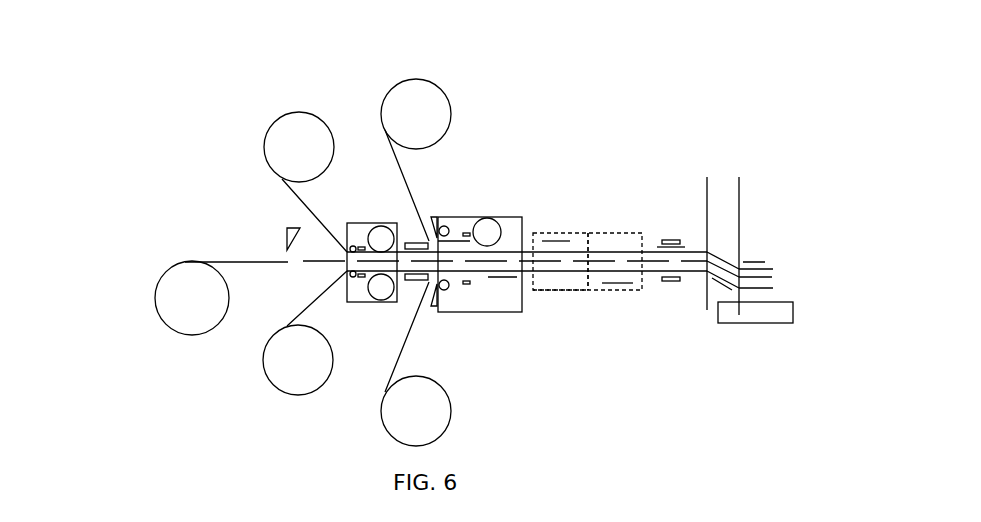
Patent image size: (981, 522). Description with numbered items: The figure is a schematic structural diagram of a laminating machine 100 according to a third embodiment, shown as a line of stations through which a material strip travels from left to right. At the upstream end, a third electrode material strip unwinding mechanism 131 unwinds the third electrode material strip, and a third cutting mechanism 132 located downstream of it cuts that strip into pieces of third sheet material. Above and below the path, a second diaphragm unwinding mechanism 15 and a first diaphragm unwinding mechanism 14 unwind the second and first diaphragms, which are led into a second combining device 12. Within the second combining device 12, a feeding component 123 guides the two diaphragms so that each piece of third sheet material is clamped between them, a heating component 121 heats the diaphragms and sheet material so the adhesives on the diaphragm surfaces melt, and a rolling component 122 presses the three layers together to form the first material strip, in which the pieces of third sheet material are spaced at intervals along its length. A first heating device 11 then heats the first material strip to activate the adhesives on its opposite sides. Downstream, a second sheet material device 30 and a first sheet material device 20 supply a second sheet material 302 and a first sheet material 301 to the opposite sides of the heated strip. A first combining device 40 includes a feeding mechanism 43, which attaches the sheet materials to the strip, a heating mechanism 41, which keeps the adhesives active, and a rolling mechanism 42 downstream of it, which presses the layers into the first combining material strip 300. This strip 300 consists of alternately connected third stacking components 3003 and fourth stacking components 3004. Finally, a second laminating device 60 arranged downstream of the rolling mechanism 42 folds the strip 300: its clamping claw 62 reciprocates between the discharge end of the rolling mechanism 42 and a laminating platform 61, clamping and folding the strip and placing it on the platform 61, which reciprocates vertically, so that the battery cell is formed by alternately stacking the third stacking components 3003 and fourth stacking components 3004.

The laminating machine 100 is at (84, 35).
The third electrode material strip unwinding mechanism 131 is at (154, 300).
The second diaphragm unwinding mechanism 15 is at (264, 150).
The first diaphragm unwinding mechanism 14 is at (263, 372).
The second sheet material device 30 is at (478, 90).
The first sheet material device 20 is at (473, 378).
The third cutting mechanism 132 is at (286, 240).
The second combining device 12 is at (372, 262).
The feeding component 123 is at (352, 243).
The heating component 121 is at (353, 278).
The rolling component 122 is at (383, 300).
The first heating device 11 is at (417, 243).
The first combining device 40 is at (476, 264).
The heating mechanism 41 is at (450, 228).
The rolling mechanism 42 is at (489, 220).
The feeding mechanism 43 is at (444, 291).
The first combining material strip 300 is at (575, 168).
The second sheet material 302 is at (542, 238).
The third stacking component 3003 is at (613, 233).
The fourth stacking component 3004 is at (558, 291).
The first sheet material 301 is at (615, 284).
The clamping claw 62 is at (672, 282).
The second laminating device 60 is at (742, 145).
The laminating platform 61 is at (758, 324).